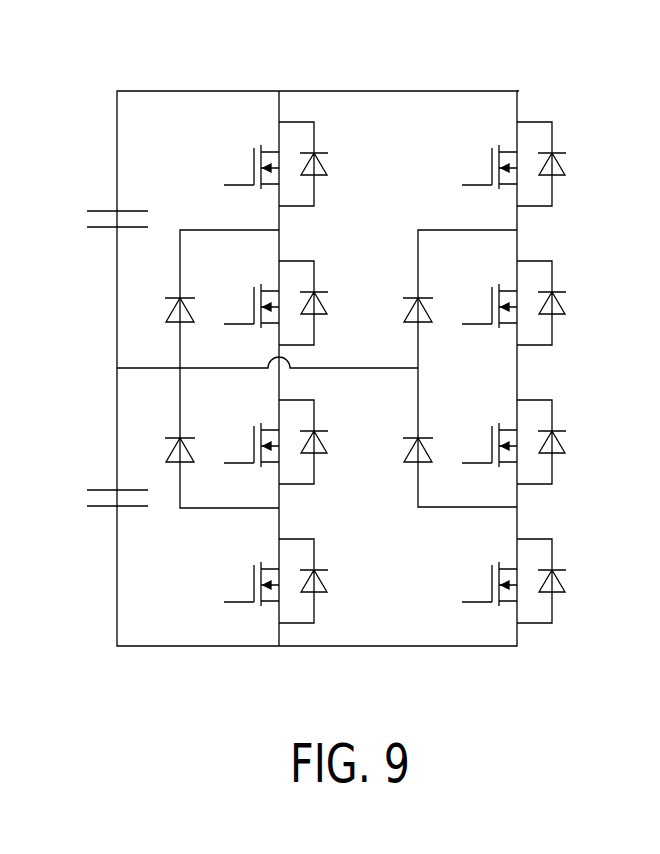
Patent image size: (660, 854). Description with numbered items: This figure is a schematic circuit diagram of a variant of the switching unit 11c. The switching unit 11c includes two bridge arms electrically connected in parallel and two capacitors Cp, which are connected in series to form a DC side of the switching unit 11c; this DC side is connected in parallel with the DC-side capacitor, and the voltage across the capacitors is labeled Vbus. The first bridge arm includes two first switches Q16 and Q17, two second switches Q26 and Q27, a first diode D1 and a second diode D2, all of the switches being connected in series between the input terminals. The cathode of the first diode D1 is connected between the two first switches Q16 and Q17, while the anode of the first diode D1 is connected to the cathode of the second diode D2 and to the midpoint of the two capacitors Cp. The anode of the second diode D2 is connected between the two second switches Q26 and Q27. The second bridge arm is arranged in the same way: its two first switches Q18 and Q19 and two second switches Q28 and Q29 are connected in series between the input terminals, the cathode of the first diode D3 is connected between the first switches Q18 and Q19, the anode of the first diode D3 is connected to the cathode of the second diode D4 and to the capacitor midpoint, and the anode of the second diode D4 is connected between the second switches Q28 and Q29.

The switching unit 11c is at (563, 67).
The first switch Q16 is at (267, 164).
The first switch Q17 is at (267, 303).
The first switch Q18 is at (504, 164).
The first switch Q19 is at (504, 303).
The second switch Q26 is at (267, 442).
The second switch Q27 is at (267, 581).
The second switch Q28 is at (504, 442).
The second switch Q29 is at (504, 581).
The first diode D1 is at (167, 293).
The second diode D2 is at (167, 433).
The first diode D3 is at (405, 293).
The second diode D4 is at (405, 433).
The capacitor Cp is at (130, 357).
The bus voltage Vbus is at (63, 356).